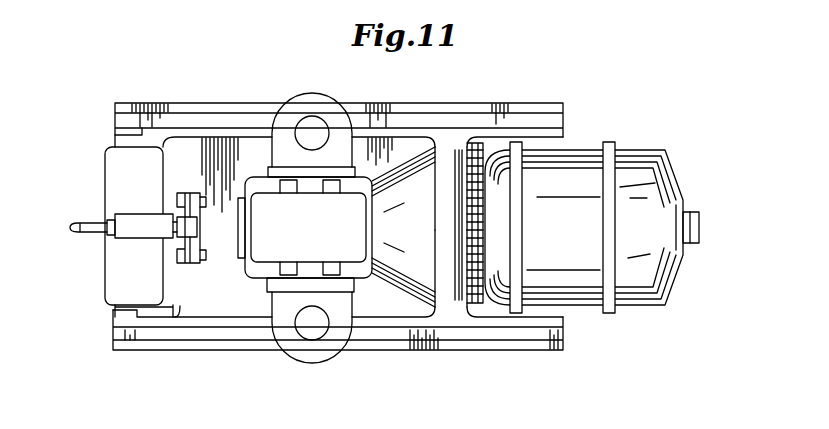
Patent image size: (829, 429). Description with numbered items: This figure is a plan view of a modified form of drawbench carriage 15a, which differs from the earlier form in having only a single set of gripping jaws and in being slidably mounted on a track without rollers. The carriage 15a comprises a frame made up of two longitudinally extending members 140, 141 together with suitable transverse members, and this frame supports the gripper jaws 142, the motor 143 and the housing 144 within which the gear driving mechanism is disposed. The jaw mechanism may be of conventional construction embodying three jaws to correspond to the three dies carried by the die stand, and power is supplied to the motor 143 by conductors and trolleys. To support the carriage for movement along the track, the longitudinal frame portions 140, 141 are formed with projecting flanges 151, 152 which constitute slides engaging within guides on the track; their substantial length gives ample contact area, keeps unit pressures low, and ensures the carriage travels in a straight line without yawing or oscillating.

The carriage 15a is at (566, 126).
The longitudinally extending member 140 is at (447, 134).
The longitudinally extending member 141 is at (458, 321).
The gripper jaws 142 is at (126, 276).
The motor 143 is at (660, 283).
The housing 144 is at (325, 232).
The projecting flange 151 is at (218, 102).
The projecting flange 152 is at (208, 335).